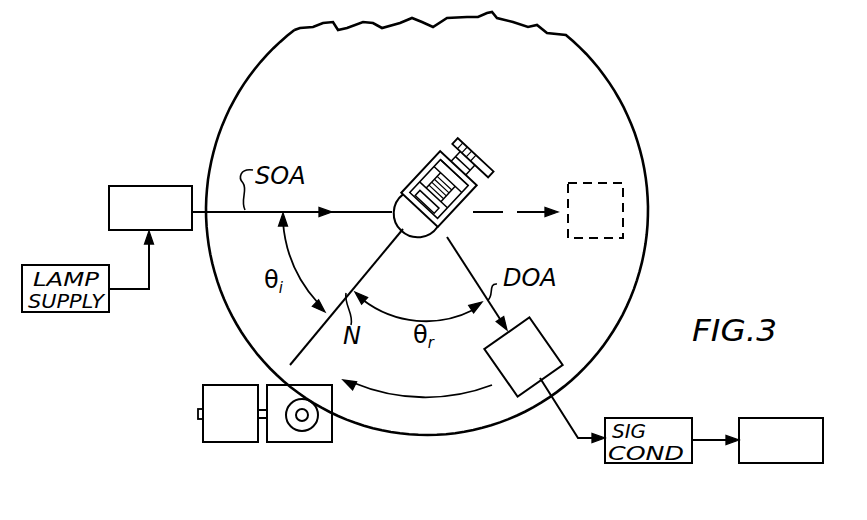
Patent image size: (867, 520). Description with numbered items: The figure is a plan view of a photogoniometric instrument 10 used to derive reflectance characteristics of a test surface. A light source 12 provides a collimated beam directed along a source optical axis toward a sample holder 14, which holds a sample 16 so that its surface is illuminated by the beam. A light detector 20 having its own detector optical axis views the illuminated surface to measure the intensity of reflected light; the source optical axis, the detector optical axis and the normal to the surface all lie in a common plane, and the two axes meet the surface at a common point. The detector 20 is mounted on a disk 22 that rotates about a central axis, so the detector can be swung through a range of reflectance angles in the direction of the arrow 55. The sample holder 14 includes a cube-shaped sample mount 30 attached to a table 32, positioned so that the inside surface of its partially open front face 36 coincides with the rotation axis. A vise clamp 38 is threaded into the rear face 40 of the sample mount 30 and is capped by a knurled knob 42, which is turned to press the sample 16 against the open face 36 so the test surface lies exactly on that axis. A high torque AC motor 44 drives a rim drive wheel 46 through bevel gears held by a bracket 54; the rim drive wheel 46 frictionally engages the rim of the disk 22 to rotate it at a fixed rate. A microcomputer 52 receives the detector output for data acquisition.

The photogoniometric instrument 10 is at (664, 209).
The light source 12 is at (140, 186).
The sample holder 14 is at (390, 139).
The sample 16 is at (430, 238).
The light detector 20 is at (586, 239).
The disk 22 is at (630, 281).
The sample mount 30 is at (462, 218).
The table 32 is at (402, 224).
The front face 36 is at (399, 200).
The vise clamp 38 is at (424, 161).
The rear face 40 is at (492, 178).
The knurled knob 42 is at (471, 152).
The high torque AC motor 44 is at (222, 425).
The rim drive wheel 46 is at (327, 442).
The microcomputer 52 is at (752, 424).
The bracket 54 is at (279, 432).
The arrow 55 is at (430, 383).